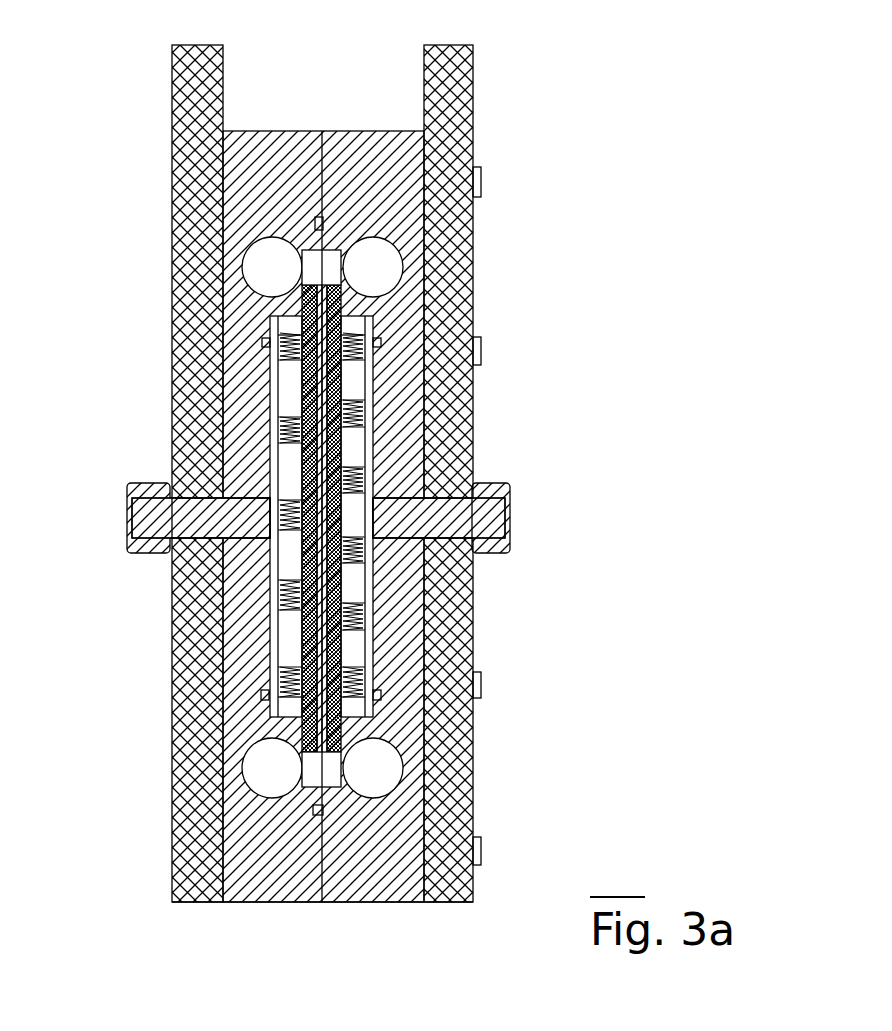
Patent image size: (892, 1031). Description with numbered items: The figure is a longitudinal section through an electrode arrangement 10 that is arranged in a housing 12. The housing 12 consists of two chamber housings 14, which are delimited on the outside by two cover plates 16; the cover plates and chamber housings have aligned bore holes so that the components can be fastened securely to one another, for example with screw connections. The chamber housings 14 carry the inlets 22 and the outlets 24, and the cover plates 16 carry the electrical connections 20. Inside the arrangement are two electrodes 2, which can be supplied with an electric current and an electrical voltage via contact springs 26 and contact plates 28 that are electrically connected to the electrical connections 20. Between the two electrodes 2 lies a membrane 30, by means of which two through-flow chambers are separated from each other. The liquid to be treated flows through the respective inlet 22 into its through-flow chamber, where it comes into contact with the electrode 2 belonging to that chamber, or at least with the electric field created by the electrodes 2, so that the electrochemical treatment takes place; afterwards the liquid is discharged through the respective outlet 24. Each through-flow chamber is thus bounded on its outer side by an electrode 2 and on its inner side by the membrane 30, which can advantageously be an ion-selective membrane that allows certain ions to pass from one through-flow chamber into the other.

The electrode arrangement 10 is at (372, 507).
The housing 12 is at (218, 900).
The chamber housings 14 is at (255, 152).
The cover plates 16 is at (195, 100).
The electrical connections 20 is at (128, 515).
The inlets 22 is at (260, 262).
The outlets 24 is at (260, 768).
The contact springs 26 is at (272, 623).
The contact plates 28 is at (230, 548).
The membrane 30 is at (320, 278).
The electrodes 2 is at (300, 303).